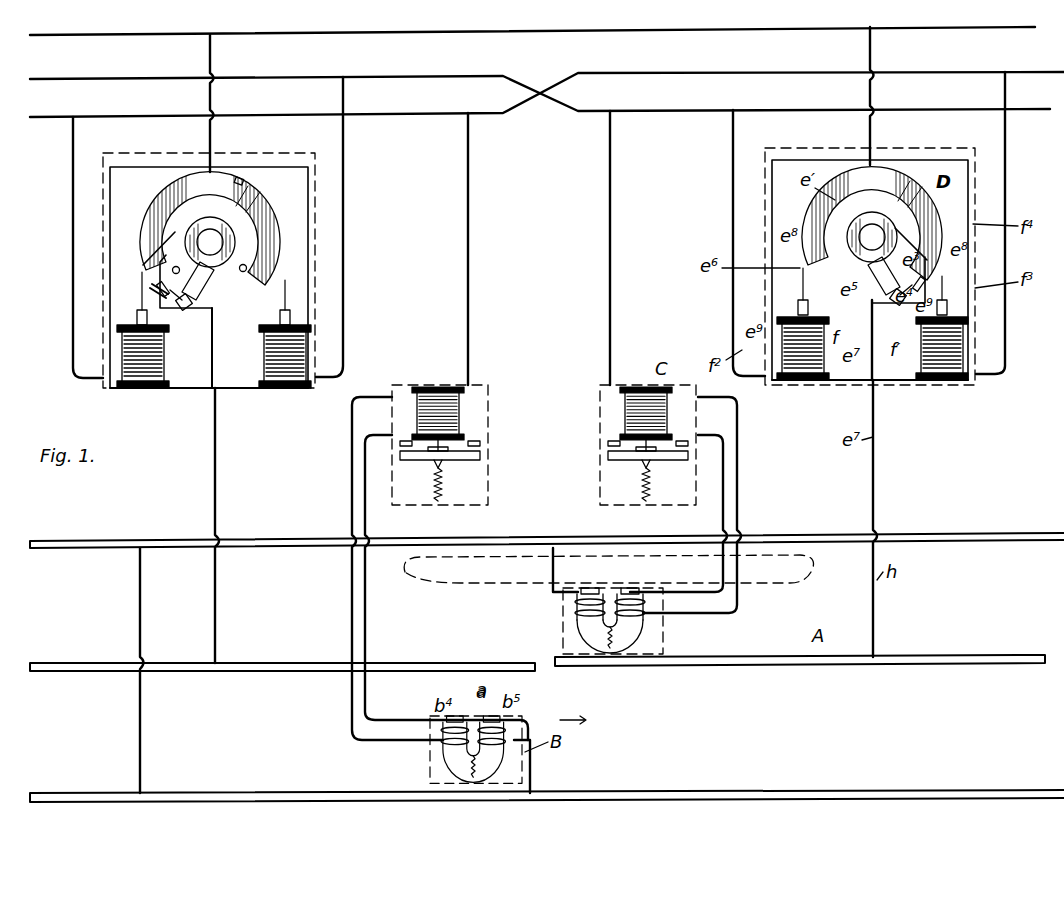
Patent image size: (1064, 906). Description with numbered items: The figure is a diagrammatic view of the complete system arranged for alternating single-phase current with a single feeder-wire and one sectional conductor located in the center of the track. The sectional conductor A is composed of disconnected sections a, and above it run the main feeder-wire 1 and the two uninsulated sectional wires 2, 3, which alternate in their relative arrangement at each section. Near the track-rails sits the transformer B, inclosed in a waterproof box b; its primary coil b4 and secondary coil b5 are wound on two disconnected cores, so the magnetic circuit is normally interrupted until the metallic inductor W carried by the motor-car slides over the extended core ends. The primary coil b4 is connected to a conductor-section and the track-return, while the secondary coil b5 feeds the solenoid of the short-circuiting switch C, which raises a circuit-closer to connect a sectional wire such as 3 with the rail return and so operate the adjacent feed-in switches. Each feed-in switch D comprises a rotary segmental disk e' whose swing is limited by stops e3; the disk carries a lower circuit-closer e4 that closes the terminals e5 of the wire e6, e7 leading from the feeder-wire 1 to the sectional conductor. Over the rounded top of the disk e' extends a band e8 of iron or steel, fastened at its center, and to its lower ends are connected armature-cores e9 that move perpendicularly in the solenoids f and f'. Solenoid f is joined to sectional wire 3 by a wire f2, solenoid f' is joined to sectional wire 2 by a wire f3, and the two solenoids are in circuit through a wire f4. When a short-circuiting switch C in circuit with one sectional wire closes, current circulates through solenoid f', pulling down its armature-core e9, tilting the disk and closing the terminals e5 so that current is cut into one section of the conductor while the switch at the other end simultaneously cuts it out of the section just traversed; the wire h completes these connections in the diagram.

The main feeder-wire 1 is at (532, 21).
The uninsulated sectional wire 2 is at (540, 83).
The uninsulated sectional wire 3 is at (547, 83).
The rotary segmental disk e' is at (209, 259).
The stops e3 is at (98, 292).
The lower circuit-closer e4 is at (186, 286).
The terminals e5 is at (157, 282).
The wire e6 is at (162, 270).
The wire e7 is at (209, 348).
The band e8 is at (212, 251).
The armature-cores e9 is at (190, 290).
The feed-in switch D is at (215, 235).
The solenoid f is at (147, 356).
The solenoid f' is at (271, 356).
The wire f2 is at (73, 330).
The wire f3 is at (343, 300).
The wire f4 is at (310, 255).
The short-circuiting switch C is at (440, 433).
The metallic inductor W is at (608, 569).
The transformer B is at (605, 605).
The primary coil b4 is at (563, 605).
The secondary coil b5 is at (649, 588).
The waterproof box b is at (617, 636).
The sectional conductor A is at (282, 648).
The conductor section a is at (800, 674).
The wire h is at (226, 525).